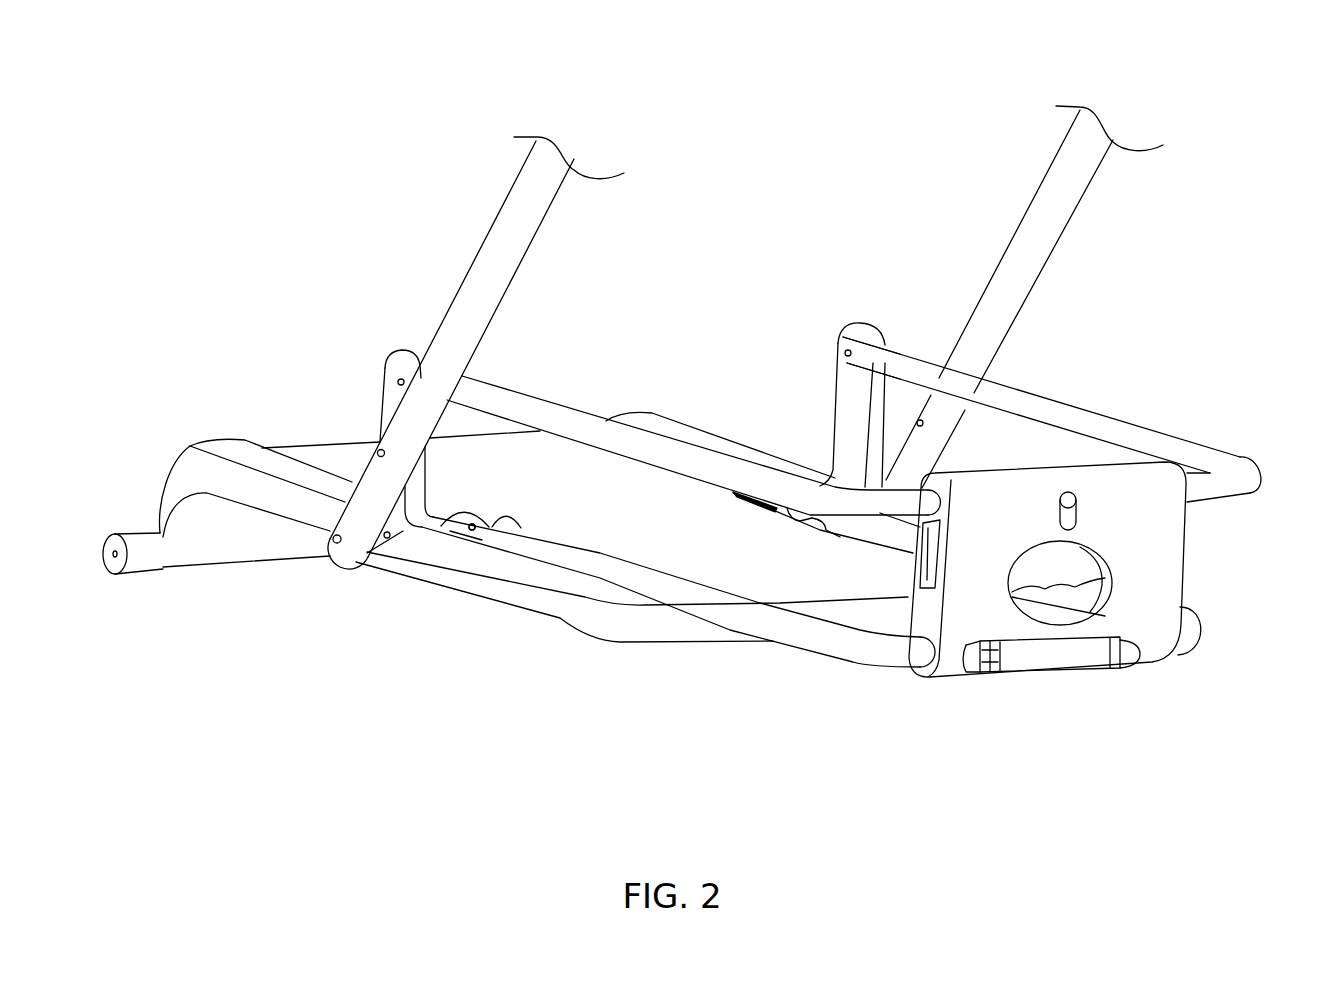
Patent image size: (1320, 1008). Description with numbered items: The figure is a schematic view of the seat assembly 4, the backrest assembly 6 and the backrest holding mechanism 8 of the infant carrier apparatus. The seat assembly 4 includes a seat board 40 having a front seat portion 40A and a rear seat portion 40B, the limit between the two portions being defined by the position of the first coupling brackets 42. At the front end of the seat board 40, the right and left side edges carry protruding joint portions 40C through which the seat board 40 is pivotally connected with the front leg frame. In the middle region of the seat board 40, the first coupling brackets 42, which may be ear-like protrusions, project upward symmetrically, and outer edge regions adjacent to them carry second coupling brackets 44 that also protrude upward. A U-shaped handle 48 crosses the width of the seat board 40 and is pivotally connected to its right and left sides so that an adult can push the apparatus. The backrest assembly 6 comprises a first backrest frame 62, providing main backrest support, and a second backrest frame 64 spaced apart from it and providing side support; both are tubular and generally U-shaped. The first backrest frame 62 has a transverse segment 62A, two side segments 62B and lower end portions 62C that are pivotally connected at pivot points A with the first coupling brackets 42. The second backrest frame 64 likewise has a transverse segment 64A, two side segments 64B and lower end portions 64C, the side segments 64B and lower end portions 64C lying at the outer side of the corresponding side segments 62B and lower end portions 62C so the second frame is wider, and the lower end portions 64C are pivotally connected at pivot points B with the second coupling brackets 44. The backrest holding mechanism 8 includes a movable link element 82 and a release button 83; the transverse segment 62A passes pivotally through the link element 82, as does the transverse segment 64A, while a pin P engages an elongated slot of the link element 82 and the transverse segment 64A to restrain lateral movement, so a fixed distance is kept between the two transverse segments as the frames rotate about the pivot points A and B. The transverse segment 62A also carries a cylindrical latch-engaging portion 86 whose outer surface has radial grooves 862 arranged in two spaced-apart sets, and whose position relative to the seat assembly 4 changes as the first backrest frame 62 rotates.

The seat assembly 4 is at (268, 438).
The backrest assembly 6 is at (1217, 637).
The backrest holding mechanism 8 is at (1165, 563).
The seat board 40 is at (303, 512).
The front seat portion 40A is at (343, 457).
The rear seat portion 40B is at (807, 573).
The protruding joint portions 40C is at (143, 563).
The first coupling brackets 42 is at (483, 532).
The second coupling brackets 44 is at (390, 393).
The handle 48 is at (527, 235).
The first backrest frame 62 is at (553, 550).
The transverse segment 62A is at (900, 658).
The side segments 62B is at (677, 593).
The lower end portions 62C is at (432, 538).
The second backrest frame 64 is at (1253, 457).
The transverse segment 64A is at (1200, 486).
The side segments 64B is at (570, 420).
The lower end portions 64C is at (893, 353).
The link element 82 is at (1107, 490).
The release button 83 is at (1097, 570).
The latch-engaging portion 86 is at (1057, 660).
The radial grooves 862 is at (990, 667).
The pivot points A is at (467, 530).
The pivot points B is at (401, 379).
The pin P is at (1069, 490).